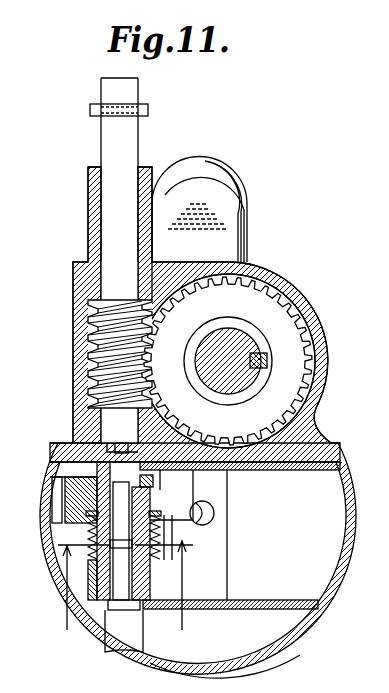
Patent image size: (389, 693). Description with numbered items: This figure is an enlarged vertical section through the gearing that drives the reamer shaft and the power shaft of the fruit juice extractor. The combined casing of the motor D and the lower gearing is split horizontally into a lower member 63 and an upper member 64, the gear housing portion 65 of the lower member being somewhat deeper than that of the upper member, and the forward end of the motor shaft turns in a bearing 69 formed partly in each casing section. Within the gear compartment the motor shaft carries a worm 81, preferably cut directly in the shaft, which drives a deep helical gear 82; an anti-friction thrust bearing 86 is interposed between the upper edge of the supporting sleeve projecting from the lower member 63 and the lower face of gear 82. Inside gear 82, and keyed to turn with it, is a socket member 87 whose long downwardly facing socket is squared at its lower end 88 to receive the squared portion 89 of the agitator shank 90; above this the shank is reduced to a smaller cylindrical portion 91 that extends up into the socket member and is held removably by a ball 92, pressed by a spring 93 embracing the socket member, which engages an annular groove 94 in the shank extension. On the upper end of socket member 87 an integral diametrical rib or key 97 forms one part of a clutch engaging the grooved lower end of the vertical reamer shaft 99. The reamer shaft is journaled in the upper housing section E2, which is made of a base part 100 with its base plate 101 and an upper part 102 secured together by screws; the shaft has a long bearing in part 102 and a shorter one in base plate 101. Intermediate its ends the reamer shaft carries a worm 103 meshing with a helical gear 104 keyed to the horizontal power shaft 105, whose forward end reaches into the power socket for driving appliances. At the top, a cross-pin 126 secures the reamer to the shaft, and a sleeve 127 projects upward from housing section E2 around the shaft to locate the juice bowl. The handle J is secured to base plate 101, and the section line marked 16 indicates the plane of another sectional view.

The cross-pin 126 is at (92, 108).
The sleeve 127 is at (90, 191).
The reamer shaft 99 is at (112, 215).
The handle J is at (205, 168).
The upper housing section E2 is at (305, 273).
The helical gear 104 is at (267, 312).
The upper part 102 is at (314, 312).
The worm 103 is at (100, 344).
The power shaft 105 is at (253, 350).
The base part 100 is at (322, 394).
The base plate 101 is at (325, 448).
The diametrical rib or key 97 is at (121, 450).
The gear 82 is at (55, 493).
The socket member 87 is at (148, 480).
The worm 81 is at (215, 510).
The upper member 64 is at (345, 472).
The annular groove 94 is at (122, 540).
The anti-friction thrust bearing 86 is at (88, 528).
The spring 93 is at (150, 538).
The bearing 69 is at (210, 565).
The lower member 63 is at (344, 548).
The ball 92 is at (95, 557).
The reduced cylindrical portion 91 is at (125, 583).
The gear housing portion 65 is at (275, 590).
The squared socket end 88 is at (104, 610).
The squared portion 89 is at (123, 612).
The shank 90 is at (133, 640).
The motor D is at (283, 648).
The section arrows 16 is at (126, 596).